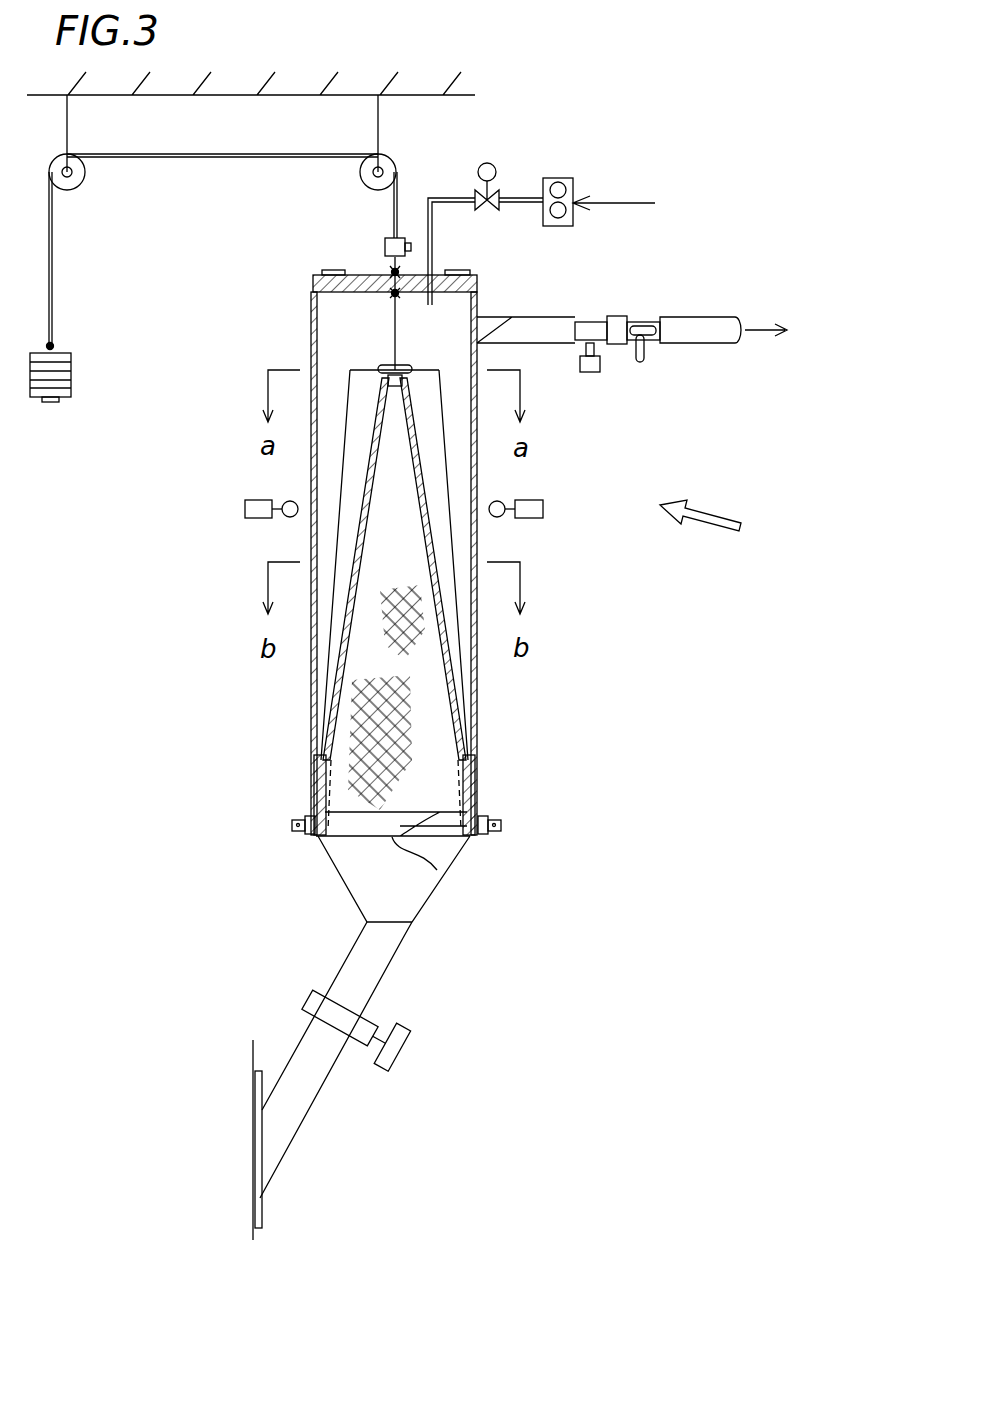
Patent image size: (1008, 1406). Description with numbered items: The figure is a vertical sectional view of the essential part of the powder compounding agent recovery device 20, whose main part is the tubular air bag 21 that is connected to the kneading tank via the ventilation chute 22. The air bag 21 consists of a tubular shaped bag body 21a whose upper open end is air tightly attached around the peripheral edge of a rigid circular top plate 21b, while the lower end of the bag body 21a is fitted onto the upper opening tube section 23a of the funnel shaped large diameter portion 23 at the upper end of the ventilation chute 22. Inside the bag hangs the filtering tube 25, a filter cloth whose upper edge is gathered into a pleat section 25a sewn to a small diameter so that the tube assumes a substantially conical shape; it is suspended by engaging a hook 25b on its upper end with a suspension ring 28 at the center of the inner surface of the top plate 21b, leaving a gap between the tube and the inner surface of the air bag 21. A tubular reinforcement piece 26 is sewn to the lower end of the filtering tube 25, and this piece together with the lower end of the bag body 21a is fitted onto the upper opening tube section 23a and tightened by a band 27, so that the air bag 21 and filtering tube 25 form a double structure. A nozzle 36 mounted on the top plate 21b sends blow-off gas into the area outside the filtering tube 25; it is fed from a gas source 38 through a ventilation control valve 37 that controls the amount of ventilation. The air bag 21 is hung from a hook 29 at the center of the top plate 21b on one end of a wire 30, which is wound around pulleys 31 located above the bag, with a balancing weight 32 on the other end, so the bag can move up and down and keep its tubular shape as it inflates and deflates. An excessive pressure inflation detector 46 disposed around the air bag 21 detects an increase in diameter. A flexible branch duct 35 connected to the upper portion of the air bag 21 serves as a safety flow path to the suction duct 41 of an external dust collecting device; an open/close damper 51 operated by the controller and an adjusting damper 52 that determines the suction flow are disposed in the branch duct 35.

The powder compounding agent recovery device 20 is at (719, 521).
The air bag 21 is at (452, 521).
The bag body 21a is at (478, 537).
The circular top plate 21b is at (357, 276).
The ventilation chute 22 is at (323, 1073).
The funnel shaped large diameter portion 23 is at (415, 898).
The upper opening tube section 23a is at (400, 836).
The filtering tube 25 is at (472, 660).
The pleat section 25a is at (378, 373).
The hook 25b is at (392, 333).
The reinforcement piece 26 is at (318, 748).
The band 27 is at (480, 818).
The suspension ring 28 is at (392, 292).
The hook 29 is at (387, 242).
The wire 30 is at (212, 158).
The pulleys 31 is at (372, 158).
The balancing weight 32 is at (72, 378).
The branch duct 35 is at (557, 318).
The nozzle 36 is at (433, 235).
The ventilation control valve 37 is at (487, 163).
The gas source 38 is at (556, 178).
The suction duct 41 is at (699, 318).
The excessive pressure inflation detector 46 is at (245, 508).
The open/close damper 51 is at (604, 348).
The adjusting damper 52 is at (638, 318).